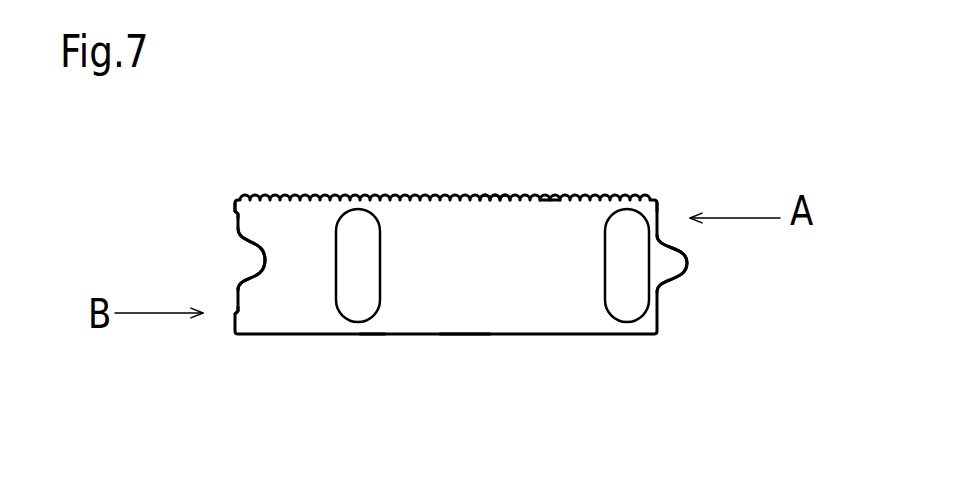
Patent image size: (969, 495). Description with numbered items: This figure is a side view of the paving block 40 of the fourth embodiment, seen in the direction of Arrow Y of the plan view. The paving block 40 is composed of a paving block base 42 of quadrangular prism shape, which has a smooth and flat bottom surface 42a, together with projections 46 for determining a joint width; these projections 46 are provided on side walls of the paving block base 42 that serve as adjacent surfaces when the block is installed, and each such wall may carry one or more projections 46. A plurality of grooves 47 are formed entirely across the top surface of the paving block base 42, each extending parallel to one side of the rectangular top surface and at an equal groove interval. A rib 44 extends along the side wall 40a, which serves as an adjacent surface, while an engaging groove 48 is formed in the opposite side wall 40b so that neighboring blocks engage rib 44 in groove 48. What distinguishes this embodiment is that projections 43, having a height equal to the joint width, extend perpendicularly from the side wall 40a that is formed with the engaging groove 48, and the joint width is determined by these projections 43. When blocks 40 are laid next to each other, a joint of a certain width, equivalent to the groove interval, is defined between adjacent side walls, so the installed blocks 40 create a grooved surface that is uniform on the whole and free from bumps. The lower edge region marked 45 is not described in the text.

The paving block 40 is at (476, 177).
The side wall 40a is at (177, 155).
The opposite side wall 40b is at (723, 139).
The paving block base 42 is at (576, 137).
The bottom surface 42a is at (330, 405).
The projections 43 is at (178, 289).
The rib 44 is at (716, 299).
The bottom edge 45 is at (505, 386).
The projections 46 is at (488, 202).
The grooves 47 is at (481, 132).
The engaging groove 48 is at (192, 260).